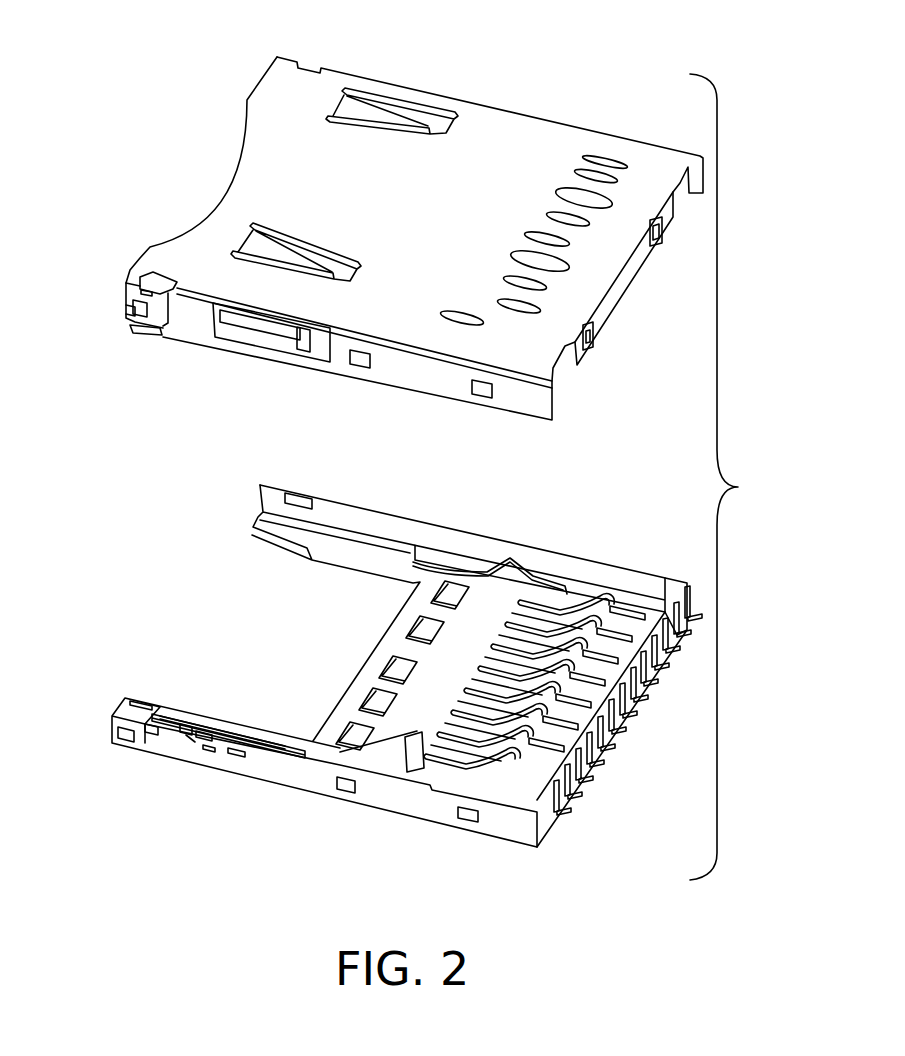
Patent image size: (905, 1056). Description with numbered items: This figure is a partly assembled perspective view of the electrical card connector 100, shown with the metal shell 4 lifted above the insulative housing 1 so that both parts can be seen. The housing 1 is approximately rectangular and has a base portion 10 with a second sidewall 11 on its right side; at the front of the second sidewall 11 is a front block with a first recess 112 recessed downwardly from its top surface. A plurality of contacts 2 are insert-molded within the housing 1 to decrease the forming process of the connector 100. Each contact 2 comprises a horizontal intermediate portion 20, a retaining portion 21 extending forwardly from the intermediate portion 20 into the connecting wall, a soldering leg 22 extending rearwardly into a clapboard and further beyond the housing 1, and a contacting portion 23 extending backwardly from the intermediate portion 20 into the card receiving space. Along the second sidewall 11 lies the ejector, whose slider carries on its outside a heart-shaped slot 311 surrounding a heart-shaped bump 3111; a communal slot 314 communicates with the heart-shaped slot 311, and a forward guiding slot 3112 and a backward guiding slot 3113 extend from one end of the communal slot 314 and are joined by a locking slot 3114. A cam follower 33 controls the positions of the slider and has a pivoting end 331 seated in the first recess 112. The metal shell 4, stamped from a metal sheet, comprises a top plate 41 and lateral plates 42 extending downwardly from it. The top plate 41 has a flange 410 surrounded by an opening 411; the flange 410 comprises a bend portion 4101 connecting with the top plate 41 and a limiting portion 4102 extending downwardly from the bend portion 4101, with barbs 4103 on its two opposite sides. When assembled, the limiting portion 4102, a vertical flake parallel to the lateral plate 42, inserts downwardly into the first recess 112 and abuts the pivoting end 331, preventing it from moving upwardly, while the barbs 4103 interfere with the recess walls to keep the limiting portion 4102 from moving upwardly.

The electrical card connector 100 is at (735, 477).
The metal shell 4 is at (464, 76).
The top plate 41 is at (535, 145).
The lateral plate 42 is at (518, 398).
The flange 410 is at (150, 288).
The bend portion 4101 is at (172, 274).
The limiting portion 4102 is at (143, 325).
The barbs 4103 is at (133, 296).
The opening 411 is at (128, 304).
The insulative housing 1 is at (603, 580).
The second sidewall 11 is at (123, 700).
The first recess 112 is at (143, 710).
The contacts 2 is at (440, 762).
The intermediate portion 20 is at (470, 745).
The retaining portion 21 is at (418, 730).
The soldering leg 22 is at (587, 773).
The contacting portion 23 is at (603, 730).
The base portion 10 is at (632, 687).
The cam follower 33 is at (237, 757).
The pivoting end 331 is at (147, 727).
The heart-shaped slot 311 is at (167, 718).
The heart-shaped bump 3111 is at (200, 734).
The forward guiding slot 3112 is at (207, 750).
The backward guiding slot 3113 is at (187, 733).
The locking slot 3114 is at (190, 737).
The communal slot 314 is at (233, 753).